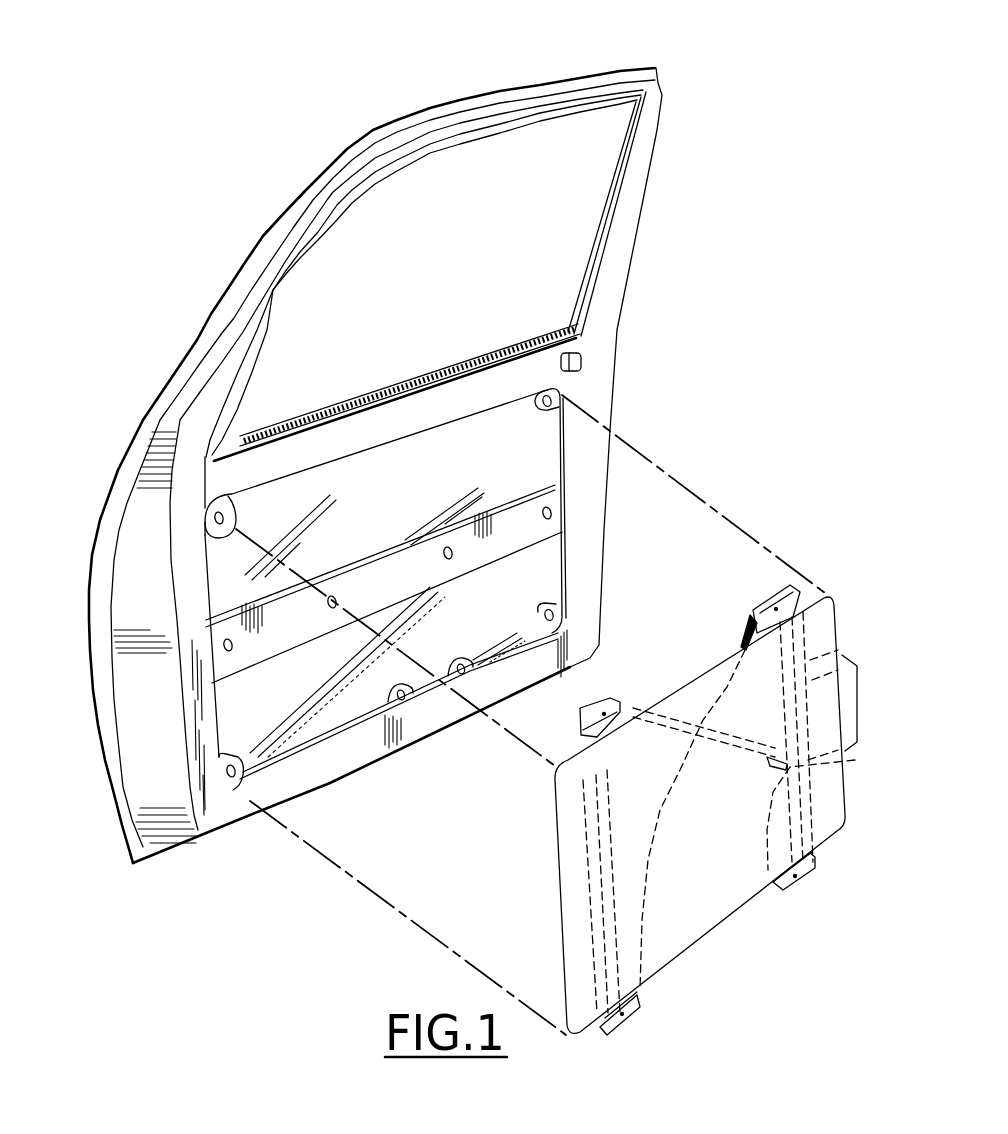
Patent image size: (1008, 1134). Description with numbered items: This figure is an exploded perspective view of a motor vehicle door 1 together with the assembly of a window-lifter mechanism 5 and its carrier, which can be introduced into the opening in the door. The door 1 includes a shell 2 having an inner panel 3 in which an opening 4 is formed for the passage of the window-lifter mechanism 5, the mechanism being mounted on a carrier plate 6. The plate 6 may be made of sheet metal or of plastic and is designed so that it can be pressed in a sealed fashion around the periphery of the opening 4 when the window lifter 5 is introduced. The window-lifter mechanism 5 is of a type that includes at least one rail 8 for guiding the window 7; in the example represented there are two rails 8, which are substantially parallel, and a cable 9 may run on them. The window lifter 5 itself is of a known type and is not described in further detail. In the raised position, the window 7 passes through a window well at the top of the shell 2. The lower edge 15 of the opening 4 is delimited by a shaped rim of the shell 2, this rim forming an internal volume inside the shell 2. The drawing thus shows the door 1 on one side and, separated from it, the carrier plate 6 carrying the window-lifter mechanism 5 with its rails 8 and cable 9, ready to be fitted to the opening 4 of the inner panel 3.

The motor vehicle door 1 is at (225, 235).
The shell 2 is at (248, 820).
The inner panel 3 is at (352, 752).
The opening 4 is at (533, 570).
The window-lifter mechanism 5 is at (860, 719).
The carrier plate 6 is at (728, 913).
The window 7 is at (482, 167).
The rail 8 is at (803, 873).
The cable 9 is at (633, 700).
The lower edge 15 is at (463, 668).